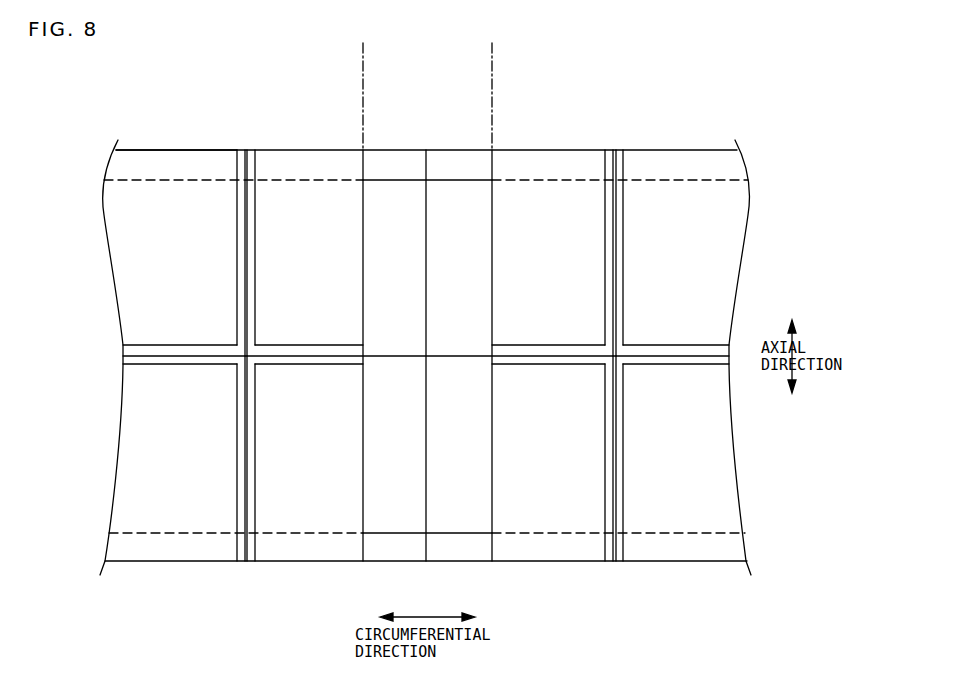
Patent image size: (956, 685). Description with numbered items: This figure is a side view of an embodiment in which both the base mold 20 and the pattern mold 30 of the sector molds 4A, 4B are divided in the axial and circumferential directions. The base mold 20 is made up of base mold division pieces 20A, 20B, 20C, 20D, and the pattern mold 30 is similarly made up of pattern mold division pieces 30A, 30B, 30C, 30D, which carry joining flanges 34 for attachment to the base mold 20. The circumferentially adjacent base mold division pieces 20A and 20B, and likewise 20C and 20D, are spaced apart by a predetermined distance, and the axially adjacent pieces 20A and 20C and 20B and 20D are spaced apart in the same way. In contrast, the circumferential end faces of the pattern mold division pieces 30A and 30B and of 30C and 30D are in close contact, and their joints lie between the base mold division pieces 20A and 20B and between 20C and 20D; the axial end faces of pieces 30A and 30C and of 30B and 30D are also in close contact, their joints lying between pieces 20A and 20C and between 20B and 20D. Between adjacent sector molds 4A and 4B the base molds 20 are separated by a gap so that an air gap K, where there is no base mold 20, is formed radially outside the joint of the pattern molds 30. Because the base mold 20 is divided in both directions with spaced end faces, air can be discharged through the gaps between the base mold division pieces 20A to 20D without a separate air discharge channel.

The base mold 20 is at (160, 146).
The base mold division piece 20A is at (422, 247).
The base mold division piece 20B is at (430, 247).
The base mold division piece 20C is at (426, 462).
The base mold division piece 20D is at (430, 462).
The pattern mold 30 is at (390, 146).
The pattern mold division piece 30A is at (243, 150).
The pattern mold division piece 30B is at (253, 150).
The pattern mold division piece 30C is at (243, 553).
The pattern mold division piece 30D is at (253, 553).
The joining flange 34 is at (335, 162).
The air gap K is at (492, 60).
The sector mold 4A is at (257, 83).
The sector mold 4B is at (606, 83).